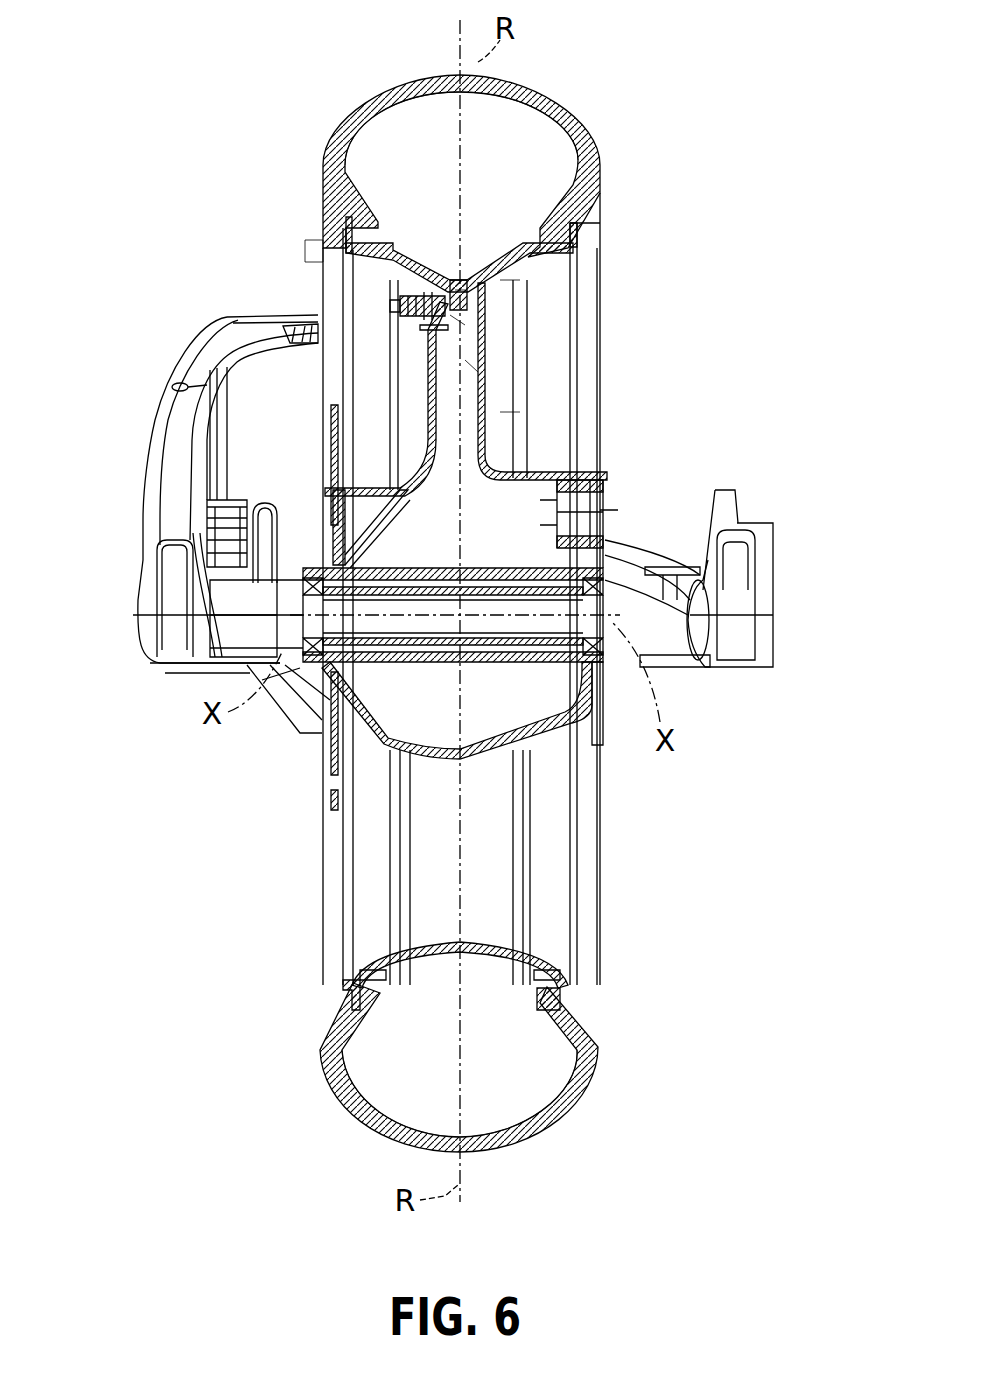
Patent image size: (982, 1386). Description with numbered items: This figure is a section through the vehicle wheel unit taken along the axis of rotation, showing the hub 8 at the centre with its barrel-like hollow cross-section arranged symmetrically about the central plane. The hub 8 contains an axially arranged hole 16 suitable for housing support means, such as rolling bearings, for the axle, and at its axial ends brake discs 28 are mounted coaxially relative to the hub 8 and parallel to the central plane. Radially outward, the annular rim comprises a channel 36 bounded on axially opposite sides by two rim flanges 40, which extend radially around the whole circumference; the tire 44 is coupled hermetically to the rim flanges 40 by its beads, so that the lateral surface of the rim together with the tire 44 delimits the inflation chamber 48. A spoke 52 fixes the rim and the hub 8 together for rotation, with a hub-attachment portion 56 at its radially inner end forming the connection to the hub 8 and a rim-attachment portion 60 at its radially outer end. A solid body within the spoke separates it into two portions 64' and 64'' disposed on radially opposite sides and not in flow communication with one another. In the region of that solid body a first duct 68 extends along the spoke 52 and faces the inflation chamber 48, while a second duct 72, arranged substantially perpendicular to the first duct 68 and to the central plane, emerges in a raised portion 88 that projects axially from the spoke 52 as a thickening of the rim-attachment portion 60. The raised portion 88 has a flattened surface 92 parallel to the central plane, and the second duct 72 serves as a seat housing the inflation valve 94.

The hub 8 is at (583, 728).
The hole 16 is at (322, 730).
The brake discs 28 is at (330, 812).
The channel 36 is at (445, 283).
The rim flanges 40 is at (398, 288).
The tire 44 is at (493, 285).
The inflation chamber 48 is at (513, 157).
The spoke 52 is at (508, 415).
The hub-attachment portion 56 is at (508, 447).
The rim-attachment portion 60 is at (463, 291).
The first spoke portion 64' is at (604, 292).
The second spoke portion 64'' is at (612, 370).
The first duct 68 is at (430, 292).
The second duct 72 is at (458, 320).
The raised portion 88 is at (440, 302).
The flattened surface 92 is at (412, 326).
The inflation valve 94 is at (303, 248).